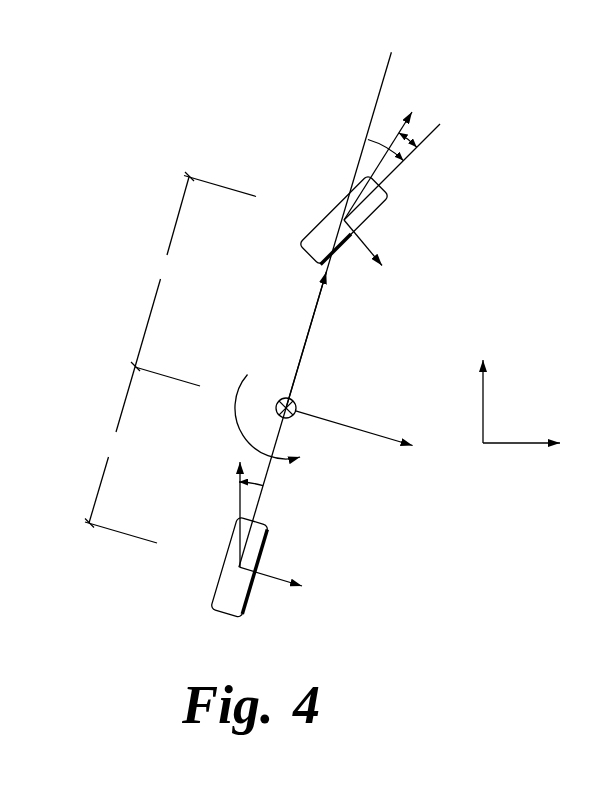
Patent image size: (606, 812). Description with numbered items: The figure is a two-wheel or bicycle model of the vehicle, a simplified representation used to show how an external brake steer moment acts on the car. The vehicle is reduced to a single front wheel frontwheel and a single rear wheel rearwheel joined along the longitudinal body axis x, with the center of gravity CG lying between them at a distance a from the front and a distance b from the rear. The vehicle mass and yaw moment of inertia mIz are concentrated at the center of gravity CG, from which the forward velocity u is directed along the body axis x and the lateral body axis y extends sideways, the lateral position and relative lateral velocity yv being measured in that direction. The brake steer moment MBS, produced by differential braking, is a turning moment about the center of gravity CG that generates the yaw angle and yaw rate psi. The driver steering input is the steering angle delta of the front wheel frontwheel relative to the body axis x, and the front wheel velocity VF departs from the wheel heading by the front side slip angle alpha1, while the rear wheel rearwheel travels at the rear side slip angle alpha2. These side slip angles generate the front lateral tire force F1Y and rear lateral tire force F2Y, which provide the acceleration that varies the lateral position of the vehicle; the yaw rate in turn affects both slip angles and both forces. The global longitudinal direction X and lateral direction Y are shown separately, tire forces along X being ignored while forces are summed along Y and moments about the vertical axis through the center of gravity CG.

The longitudinal body axis x is at (318, 296).
The forward velocity u is at (307, 340).
The center of gravity CG is at (284, 398).
The lateral body axis y is at (363, 437).
The lateral position and relative lateral velocity yv is at (311, 441).
The vehicle mass and yaw moment of inertia mIz is at (347, 389).
The yaw angle and yaw rate psi is at (264, 405).
The brake steer moment MBS is at (207, 436).
The front wheel frontwheel is at (344, 220).
The front side slip angle alpha1 is at (394, 172).
The front wheel velocity VF is at (384, 153).
The steering angle delta is at (371, 147).
The front lateral tire force F1Y is at (378, 259).
The rear wheel rearwheel is at (240, 567).
The rear side slip angle alpha2 is at (266, 514).
The rear lateral tire force F2Y is at (290, 587).
The distance from mass center to front a is at (193, 279).
The distance from mass center to rear b is at (121, 455).
The longitudinal direction X is at (483, 386).
The lateral direction Y is at (532, 443).